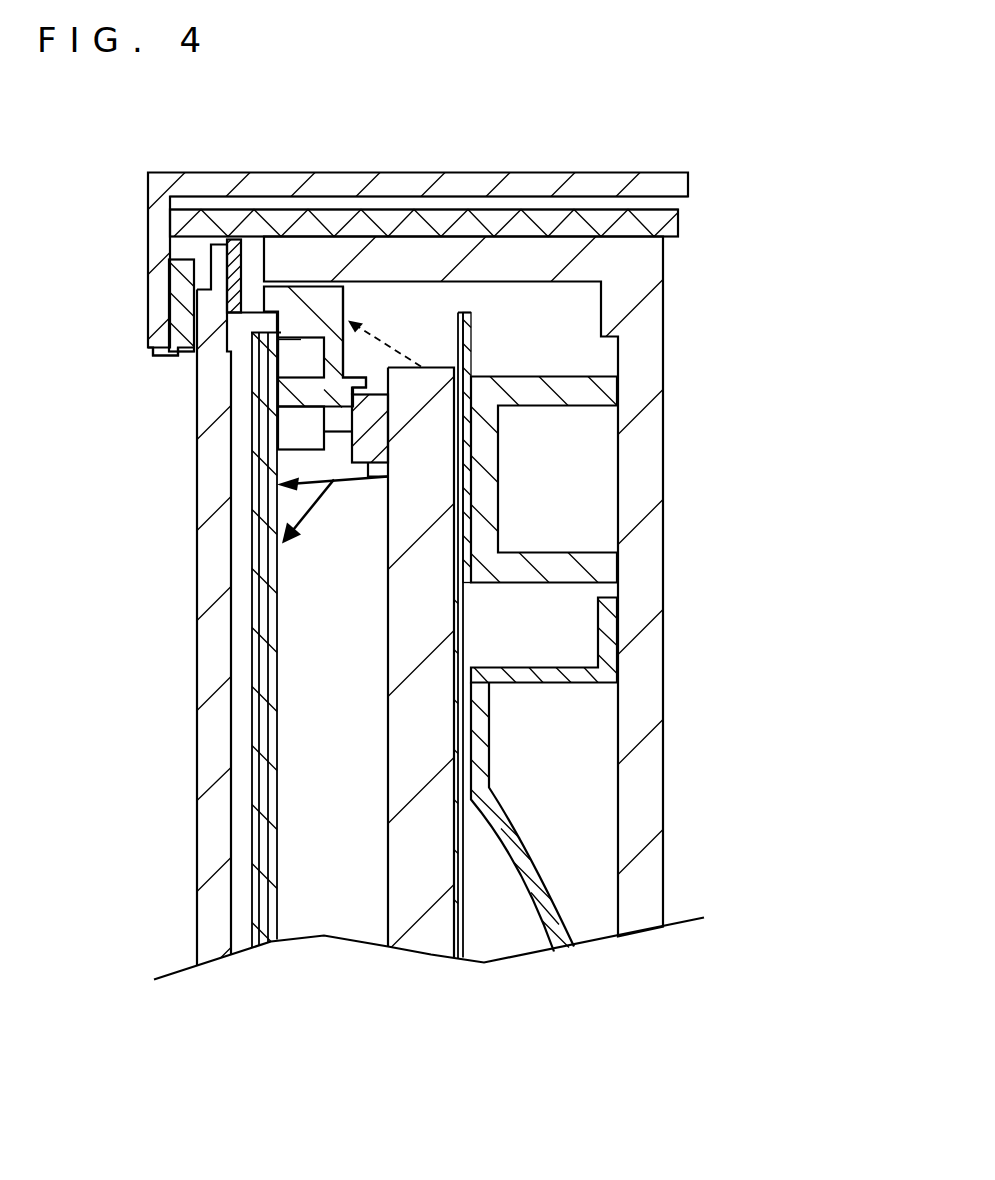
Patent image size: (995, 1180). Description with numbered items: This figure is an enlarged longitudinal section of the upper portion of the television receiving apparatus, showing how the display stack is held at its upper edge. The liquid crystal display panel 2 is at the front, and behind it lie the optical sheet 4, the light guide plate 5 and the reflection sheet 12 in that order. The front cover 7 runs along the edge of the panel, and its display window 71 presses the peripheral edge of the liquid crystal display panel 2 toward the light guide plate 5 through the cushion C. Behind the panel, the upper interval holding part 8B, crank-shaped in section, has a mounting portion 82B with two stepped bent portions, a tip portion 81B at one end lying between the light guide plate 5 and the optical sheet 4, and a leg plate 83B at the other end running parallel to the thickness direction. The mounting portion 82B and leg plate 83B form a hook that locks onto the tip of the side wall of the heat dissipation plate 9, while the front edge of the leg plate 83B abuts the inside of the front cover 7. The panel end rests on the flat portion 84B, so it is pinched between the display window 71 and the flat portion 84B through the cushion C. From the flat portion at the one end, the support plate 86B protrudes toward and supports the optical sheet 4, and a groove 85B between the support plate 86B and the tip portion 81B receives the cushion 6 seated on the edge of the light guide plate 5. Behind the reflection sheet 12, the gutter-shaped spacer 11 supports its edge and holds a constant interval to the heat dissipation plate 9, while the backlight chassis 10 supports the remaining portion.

The front cover 7 is at (665, 172).
The leg plate 83B is at (680, 222).
The upper interval holding part 8B is at (456, 208).
The heat dissipation plate 9 is at (663, 795).
The liquid crystal display panel 2 is at (192, 656).
The display window 71 is at (166, 356).
The cushion C is at (180, 353).
The mounting portion 82B is at (290, 312).
The flat portion 84B is at (252, 258).
The groove 85B is at (343, 413).
The support plate 86B is at (285, 396).
The tip portion 81B is at (287, 458).
The cushion 6 is at (387, 468).
The optical sheet 4 is at (250, 737).
The light guide plate 5 is at (385, 880).
The reflection sheet 12 is at (460, 642).
The spacer 11 is at (598, 407).
The backlight chassis 10 is at (606, 686).